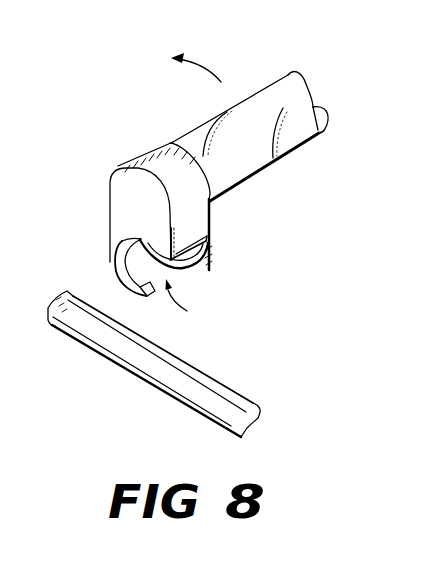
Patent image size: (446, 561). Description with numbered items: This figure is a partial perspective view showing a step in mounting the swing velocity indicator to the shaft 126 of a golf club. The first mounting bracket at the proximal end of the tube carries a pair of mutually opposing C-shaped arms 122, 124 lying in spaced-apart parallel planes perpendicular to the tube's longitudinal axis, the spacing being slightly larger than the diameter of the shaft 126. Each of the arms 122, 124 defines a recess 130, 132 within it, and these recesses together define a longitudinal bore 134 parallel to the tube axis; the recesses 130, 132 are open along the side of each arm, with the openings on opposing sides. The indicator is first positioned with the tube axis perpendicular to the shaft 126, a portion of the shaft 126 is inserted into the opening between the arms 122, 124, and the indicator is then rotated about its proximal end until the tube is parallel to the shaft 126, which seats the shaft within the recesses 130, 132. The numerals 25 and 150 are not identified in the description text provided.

The tubular member 25 is at (320, 92).
The direction of rotation 150 is at (198, 63).
The longitudinal bore 134 is at (220, 212).
The recess 132 is at (213, 250).
The C-shaped arm 122 is at (113, 264).
The C-shaped arm 124 is at (187, 276).
The recess 130 is at (194, 302).
The golf club shaft 126 is at (148, 383).